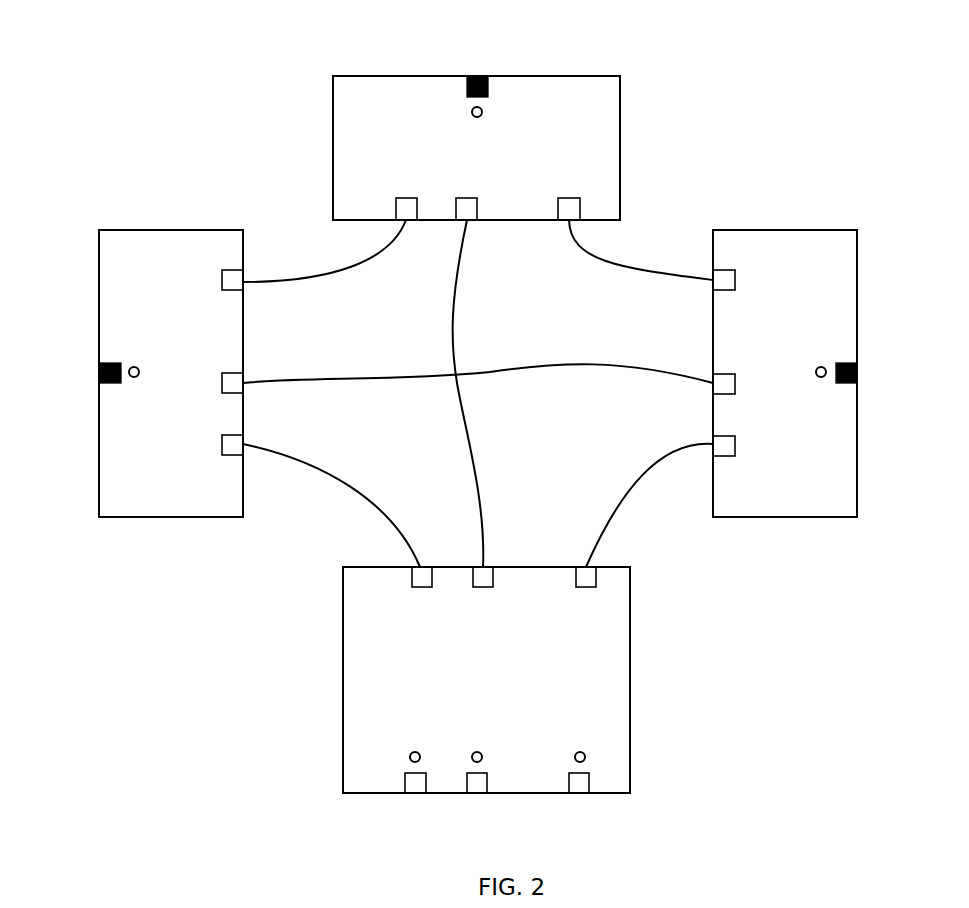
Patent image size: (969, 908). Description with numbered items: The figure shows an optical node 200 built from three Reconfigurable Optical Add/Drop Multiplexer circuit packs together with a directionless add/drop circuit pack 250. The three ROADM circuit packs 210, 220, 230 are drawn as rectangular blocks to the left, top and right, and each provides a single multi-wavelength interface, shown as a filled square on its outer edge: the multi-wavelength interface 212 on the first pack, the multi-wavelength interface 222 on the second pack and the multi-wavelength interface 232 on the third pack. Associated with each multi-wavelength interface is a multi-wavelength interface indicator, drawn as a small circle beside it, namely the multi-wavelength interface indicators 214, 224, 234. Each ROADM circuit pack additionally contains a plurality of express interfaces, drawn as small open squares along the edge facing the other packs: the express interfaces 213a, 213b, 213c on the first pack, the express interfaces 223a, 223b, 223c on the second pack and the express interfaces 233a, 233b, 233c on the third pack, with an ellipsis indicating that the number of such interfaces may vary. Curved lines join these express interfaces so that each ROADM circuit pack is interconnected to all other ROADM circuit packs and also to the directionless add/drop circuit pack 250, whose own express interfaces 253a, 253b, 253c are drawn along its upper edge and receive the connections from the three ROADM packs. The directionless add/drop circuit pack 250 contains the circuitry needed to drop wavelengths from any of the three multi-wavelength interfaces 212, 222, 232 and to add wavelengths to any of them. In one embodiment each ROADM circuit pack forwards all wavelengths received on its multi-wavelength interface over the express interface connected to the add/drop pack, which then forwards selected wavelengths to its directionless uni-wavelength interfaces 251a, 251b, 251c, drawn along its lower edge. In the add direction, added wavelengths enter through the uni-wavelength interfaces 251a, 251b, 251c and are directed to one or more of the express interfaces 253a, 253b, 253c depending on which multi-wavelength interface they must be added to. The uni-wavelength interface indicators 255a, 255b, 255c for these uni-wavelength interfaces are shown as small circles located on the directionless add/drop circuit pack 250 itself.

The optical node 200 is at (207, 58).
The ROADM circuit pack 210 is at (99, 230).
The multi-wavelength interface 212 is at (99, 383).
The express interface 213a is at (222, 452).
The express interface 213b is at (222, 386).
The express interface 213c is at (222, 283).
The multi-wavelength interface indicator 214 is at (134, 367).
The ROADM circuit pack 220 is at (620, 78).
The multi-wavelength interface 222 is at (467, 77).
The express interface 223a is at (398, 198).
The express interface 223b is at (470, 198).
The express interface 223c is at (570, 198).
The multi-wavelength interface indicator 224 is at (482, 112).
The ROADM circuit pack 230 is at (857, 230).
The multi-wavelength interface 232 is at (857, 383).
The express interface 233a is at (735, 444).
The express interface 233b is at (735, 376).
The express interface 233c is at (735, 273).
The multi-wavelength interface indicator 234 is at (821, 367).
The directionless add/drop circuit pack 250 is at (343, 651).
The directionless uni-wavelength interface 251a is at (412, 794).
The directionless uni-wavelength interface 251b is at (477, 794).
The directionless uni-wavelength interface 251c is at (579, 794).
The express interface 253a is at (420, 588).
The express interface 253b is at (481, 588).
The express interface 253c is at (584, 588).
The uni-wavelength interface indicator 255a is at (413, 752).
The uni-wavelength interface indicator 255b is at (475, 752).
The uni-wavelength interface indicator 255c is at (578, 752).